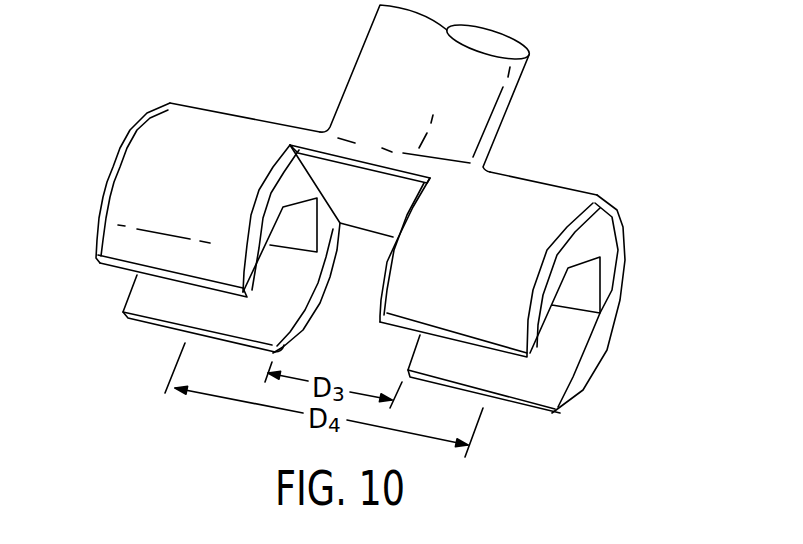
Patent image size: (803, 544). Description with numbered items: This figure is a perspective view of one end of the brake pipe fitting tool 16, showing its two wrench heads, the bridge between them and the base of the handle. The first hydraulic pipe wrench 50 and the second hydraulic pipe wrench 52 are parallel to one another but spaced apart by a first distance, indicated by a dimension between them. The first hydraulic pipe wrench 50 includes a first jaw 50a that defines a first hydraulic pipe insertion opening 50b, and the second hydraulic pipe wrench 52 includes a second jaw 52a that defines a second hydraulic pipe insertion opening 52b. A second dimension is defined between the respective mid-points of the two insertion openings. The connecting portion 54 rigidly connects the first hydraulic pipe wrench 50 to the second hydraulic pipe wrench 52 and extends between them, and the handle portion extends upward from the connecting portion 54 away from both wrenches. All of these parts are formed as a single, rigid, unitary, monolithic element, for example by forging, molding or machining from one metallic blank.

The brake pipe fitting tool 16 is at (590, 113).
The first hydraulic pipe wrench 50 is at (153, 170).
The first jaw 50a is at (142, 300).
The first hydraulic pipe insertion opening 50b is at (183, 305).
The second hydraulic pipe wrench 52 is at (518, 237).
The second jaw 52a is at (550, 372).
The second hydraulic pipe insertion opening 52b is at (568, 328).
The connecting portion 54 is at (375, 197).